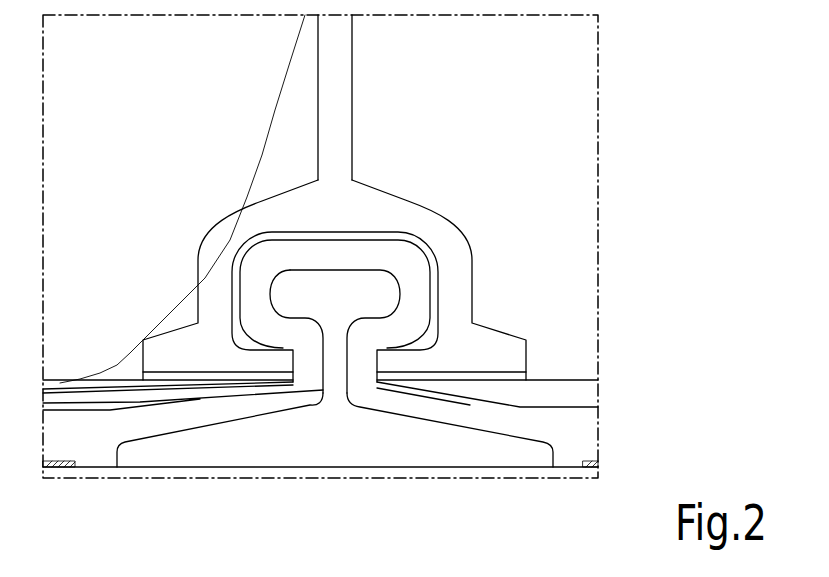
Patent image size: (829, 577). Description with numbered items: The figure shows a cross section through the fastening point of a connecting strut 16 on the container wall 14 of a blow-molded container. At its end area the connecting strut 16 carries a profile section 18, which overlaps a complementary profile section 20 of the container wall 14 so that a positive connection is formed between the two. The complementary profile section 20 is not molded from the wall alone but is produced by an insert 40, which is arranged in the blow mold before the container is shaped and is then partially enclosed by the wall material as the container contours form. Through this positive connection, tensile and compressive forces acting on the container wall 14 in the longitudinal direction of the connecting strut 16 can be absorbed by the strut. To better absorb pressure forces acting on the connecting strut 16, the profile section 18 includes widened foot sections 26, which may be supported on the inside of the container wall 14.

The container wall 14 is at (98, 437).
The connecting strut 16 is at (335, 98).
The profile section 18 is at (490, 304).
The complementary profile section 20 is at (256, 292).
The widened foot sections 26 is at (412, 360).
The insert 40 is at (218, 442).